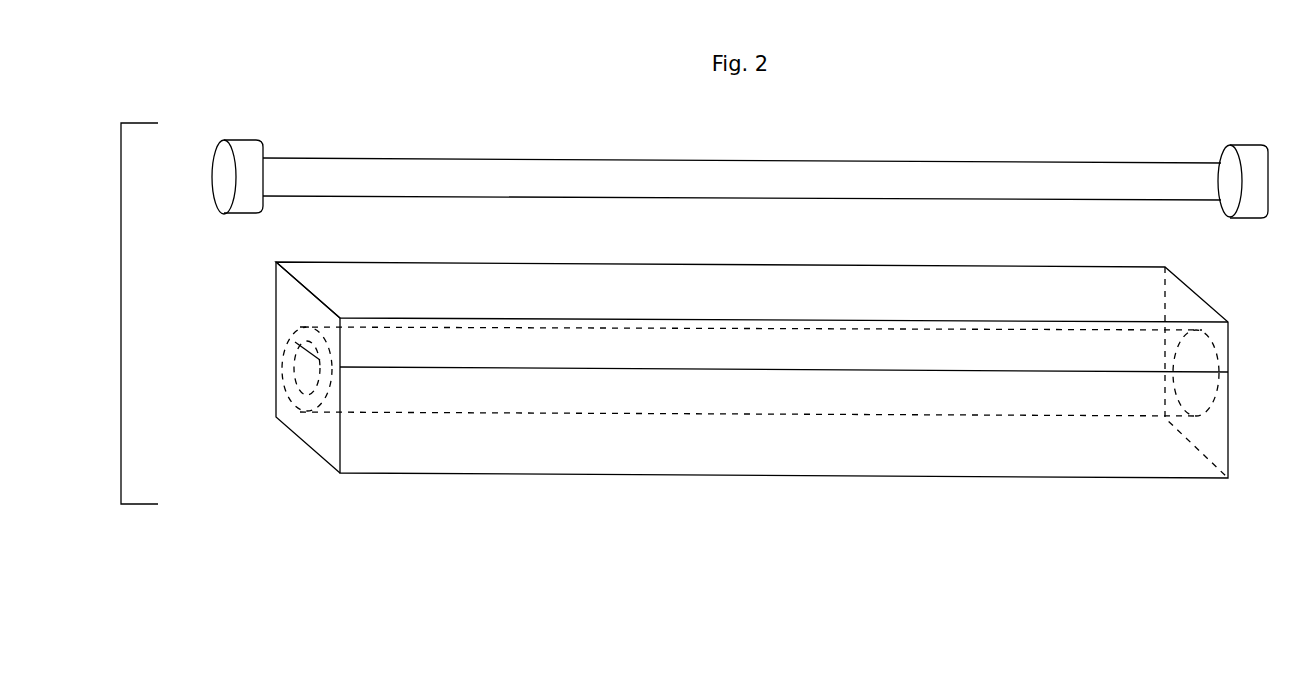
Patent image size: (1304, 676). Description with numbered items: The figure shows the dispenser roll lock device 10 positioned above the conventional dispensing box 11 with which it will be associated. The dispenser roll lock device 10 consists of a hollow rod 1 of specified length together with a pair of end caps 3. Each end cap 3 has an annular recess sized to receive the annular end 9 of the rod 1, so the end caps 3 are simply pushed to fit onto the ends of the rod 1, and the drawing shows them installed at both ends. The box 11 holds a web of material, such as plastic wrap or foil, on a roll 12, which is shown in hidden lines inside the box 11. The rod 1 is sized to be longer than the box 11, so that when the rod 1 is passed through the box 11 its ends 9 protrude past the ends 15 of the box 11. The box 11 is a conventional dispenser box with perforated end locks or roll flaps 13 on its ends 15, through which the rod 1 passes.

The hollow rod 1 is at (312, 158).
The end caps 3 is at (240, 139).
The annular end 9 is at (1218, 203).
The dispenser roll lock device 10 is at (522, 140).
The box 11 is at (373, 473).
The roll 12 is at (943, 415).
The roll flaps 13 is at (307, 372).
The ends 15 is at (322, 430).